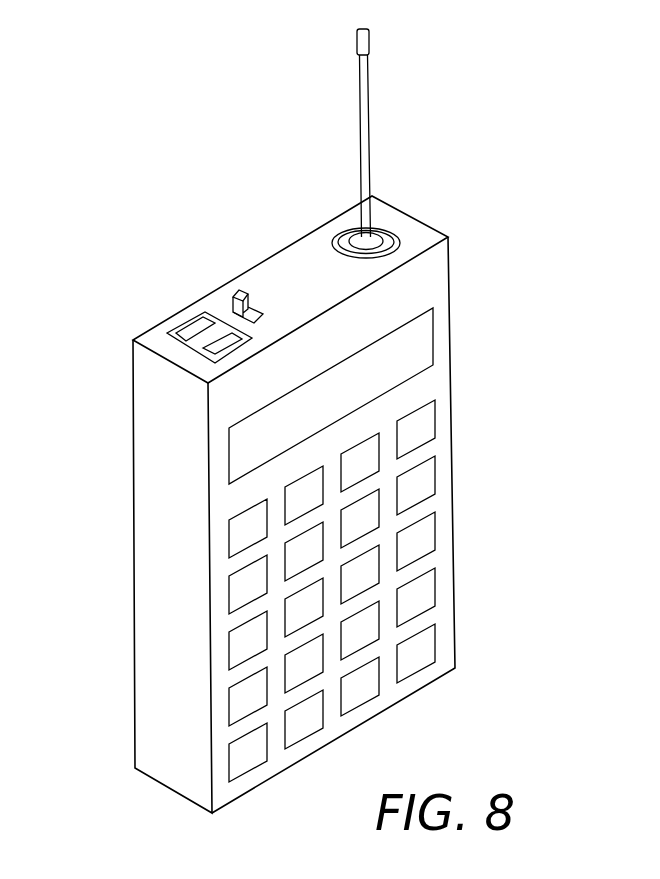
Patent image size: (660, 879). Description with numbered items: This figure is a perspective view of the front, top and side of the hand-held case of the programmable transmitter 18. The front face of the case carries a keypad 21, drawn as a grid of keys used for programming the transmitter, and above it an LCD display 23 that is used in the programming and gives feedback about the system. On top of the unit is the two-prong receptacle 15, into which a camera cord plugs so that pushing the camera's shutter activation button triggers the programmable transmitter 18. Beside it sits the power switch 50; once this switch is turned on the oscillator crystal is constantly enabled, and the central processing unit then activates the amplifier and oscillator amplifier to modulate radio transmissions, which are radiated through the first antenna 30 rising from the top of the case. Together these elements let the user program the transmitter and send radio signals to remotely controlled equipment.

The programmable transmitter 18 is at (134, 522).
The first antenna 30 is at (358, 137).
The power switch 50 is at (254, 297).
The two-prong receptacle 15 is at (195, 322).
The LCD display 23 is at (433, 335).
The keypad 21 is at (432, 583).